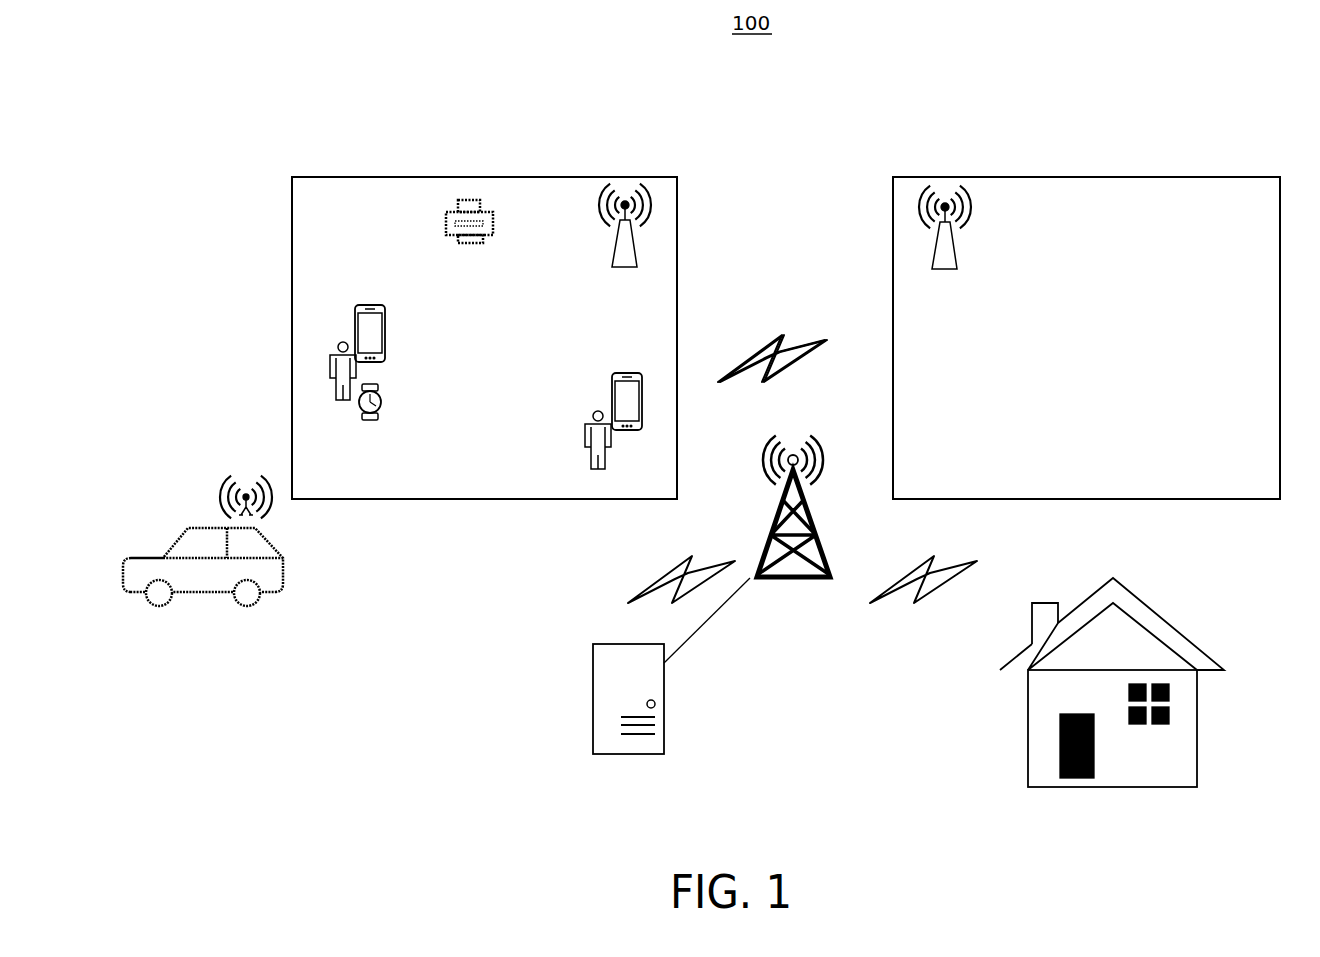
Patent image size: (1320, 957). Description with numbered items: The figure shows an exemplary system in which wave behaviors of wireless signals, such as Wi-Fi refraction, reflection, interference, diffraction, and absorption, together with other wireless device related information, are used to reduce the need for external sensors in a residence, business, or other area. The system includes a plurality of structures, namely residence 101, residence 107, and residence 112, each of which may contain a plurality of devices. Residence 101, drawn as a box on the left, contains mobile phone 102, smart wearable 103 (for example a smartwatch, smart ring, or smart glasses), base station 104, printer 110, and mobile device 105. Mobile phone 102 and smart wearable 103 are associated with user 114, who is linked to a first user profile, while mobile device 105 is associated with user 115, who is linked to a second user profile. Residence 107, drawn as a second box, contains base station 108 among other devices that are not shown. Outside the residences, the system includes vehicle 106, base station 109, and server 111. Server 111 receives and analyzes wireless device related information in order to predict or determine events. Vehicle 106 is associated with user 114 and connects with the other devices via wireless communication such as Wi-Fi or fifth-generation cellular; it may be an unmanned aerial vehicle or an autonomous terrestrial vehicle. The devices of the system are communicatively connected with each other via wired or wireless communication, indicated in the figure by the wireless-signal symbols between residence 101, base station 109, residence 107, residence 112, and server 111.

The residence 101 is at (320, 177).
The mobile phone 102 is at (385, 308).
The smart wearable 103 is at (382, 412).
The base station 104 is at (640, 265).
The mobile device 105 is at (642, 418).
The vehicle 106 is at (288, 583).
The residence 107 is at (1213, 176).
The base station 108 is at (955, 267).
The base station 109 is at (833, 561).
The printer 110 is at (493, 213).
The server 111 is at (593, 685).
The residence 112 is at (1032, 640).
The user 114 is at (330, 371).
The user 115 is at (587, 426).